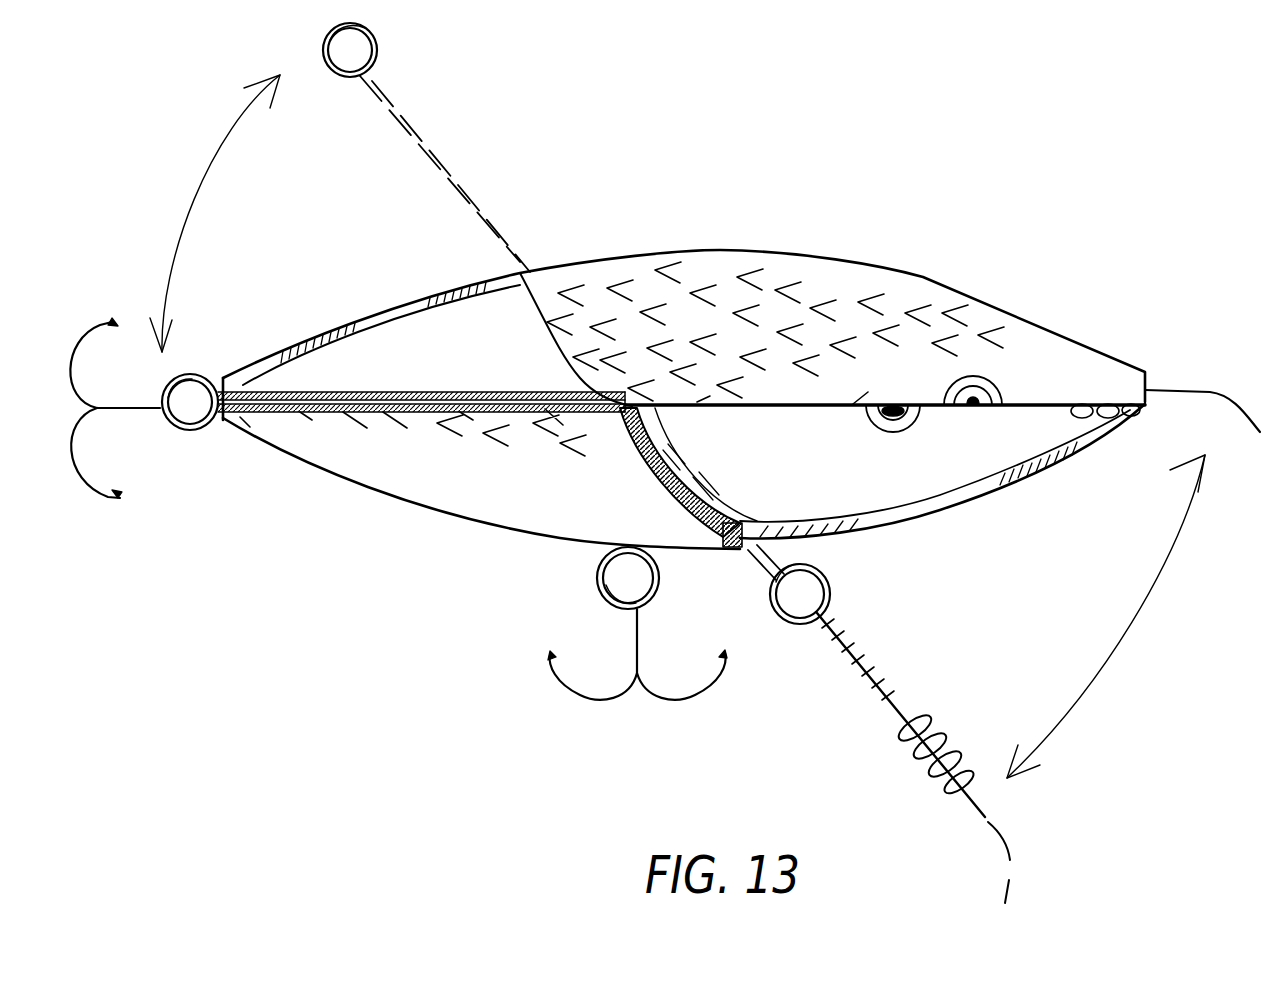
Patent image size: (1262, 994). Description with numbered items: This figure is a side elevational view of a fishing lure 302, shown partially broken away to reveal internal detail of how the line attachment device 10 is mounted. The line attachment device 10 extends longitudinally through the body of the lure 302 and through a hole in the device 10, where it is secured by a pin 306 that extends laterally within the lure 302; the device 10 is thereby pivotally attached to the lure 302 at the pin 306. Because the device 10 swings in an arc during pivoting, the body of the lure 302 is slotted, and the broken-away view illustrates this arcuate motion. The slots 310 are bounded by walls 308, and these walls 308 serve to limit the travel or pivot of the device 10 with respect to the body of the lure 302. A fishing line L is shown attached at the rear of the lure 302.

The line attachment device 10 is at (838, 589).
The lure 302 is at (412, 508).
The pin 306 is at (624, 408).
The walls 308 is at (268, 394).
The slots 310 is at (374, 316).
The fishing line L is at (1202, 371).